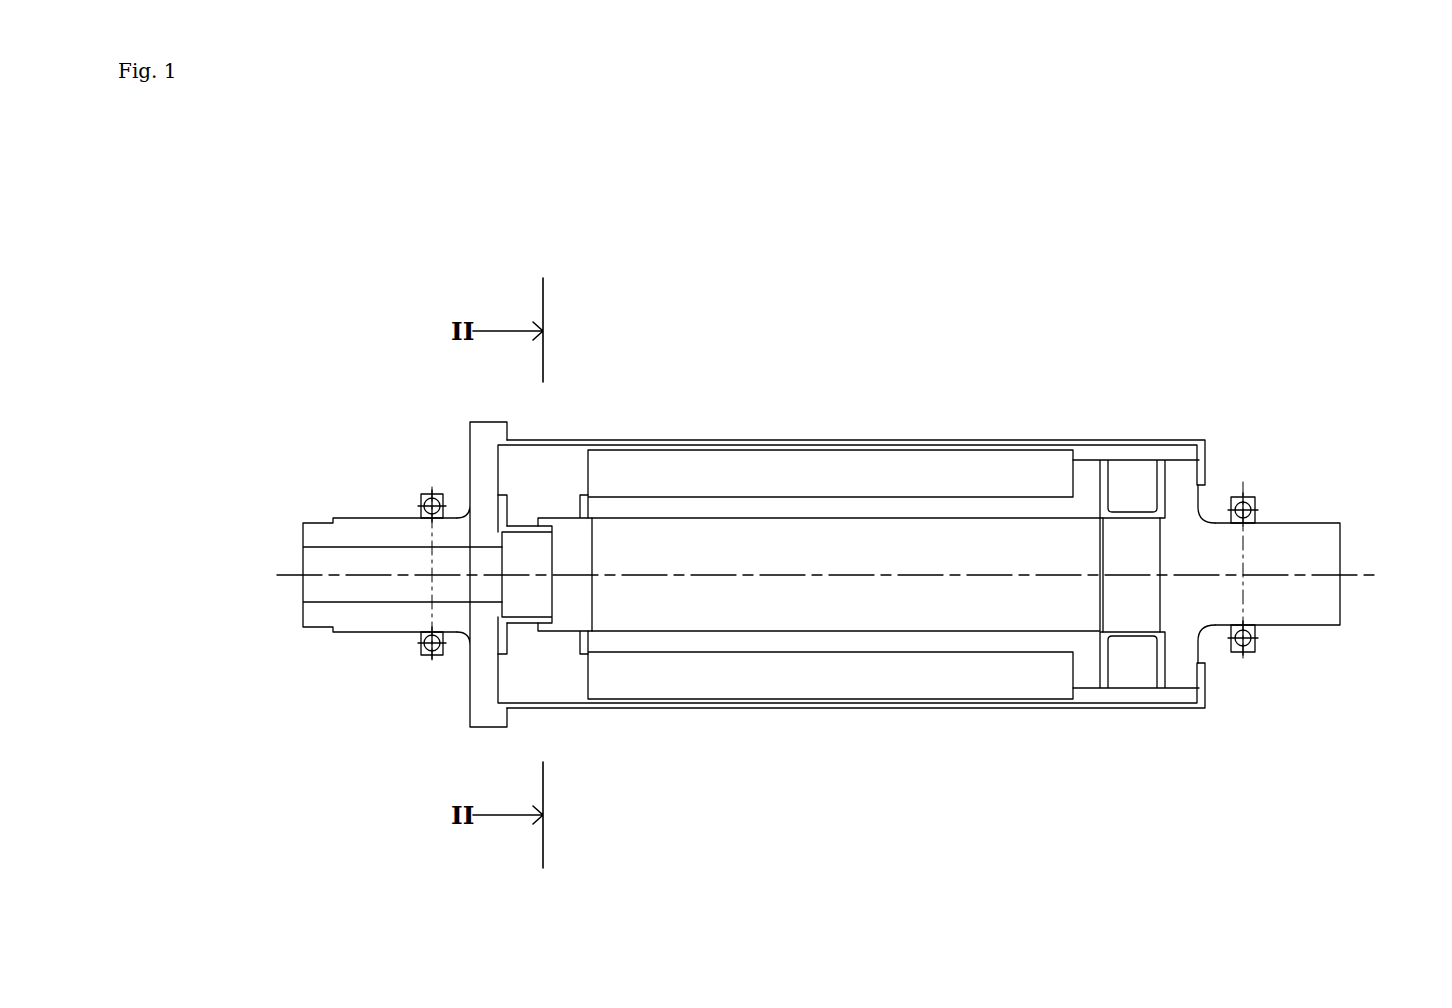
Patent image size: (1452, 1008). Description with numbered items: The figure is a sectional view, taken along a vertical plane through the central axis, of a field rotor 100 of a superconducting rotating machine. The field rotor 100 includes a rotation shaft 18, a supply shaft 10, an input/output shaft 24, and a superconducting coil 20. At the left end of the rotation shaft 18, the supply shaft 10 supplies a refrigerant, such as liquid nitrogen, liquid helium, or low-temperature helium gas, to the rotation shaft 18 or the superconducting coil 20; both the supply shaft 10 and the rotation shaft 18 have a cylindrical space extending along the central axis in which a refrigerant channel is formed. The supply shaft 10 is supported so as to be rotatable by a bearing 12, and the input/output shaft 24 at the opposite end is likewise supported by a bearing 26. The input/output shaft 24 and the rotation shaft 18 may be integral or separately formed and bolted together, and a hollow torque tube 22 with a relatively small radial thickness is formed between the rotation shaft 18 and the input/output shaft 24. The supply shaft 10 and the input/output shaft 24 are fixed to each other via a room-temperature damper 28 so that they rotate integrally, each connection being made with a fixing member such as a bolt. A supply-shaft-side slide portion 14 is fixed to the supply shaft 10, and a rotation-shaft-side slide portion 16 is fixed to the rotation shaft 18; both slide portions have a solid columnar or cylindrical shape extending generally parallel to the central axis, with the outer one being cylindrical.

The field rotor 100 is at (270, 262).
The supply shaft 10 is at (303, 617).
The bearing 12 is at (422, 655).
The supply-shaft-side slide portion 14 is at (529, 526).
The rotation-shaft-side slide portion 16 is at (553, 517).
The rotation shaft 18 is at (862, 495).
The superconducting coil 20 is at (753, 447).
The torque tube 22 is at (1122, 512).
The input/output shaft 24 is at (1292, 522).
The bearing 26 is at (1250, 497).
The room-temperature damper 28 is at (1010, 440).